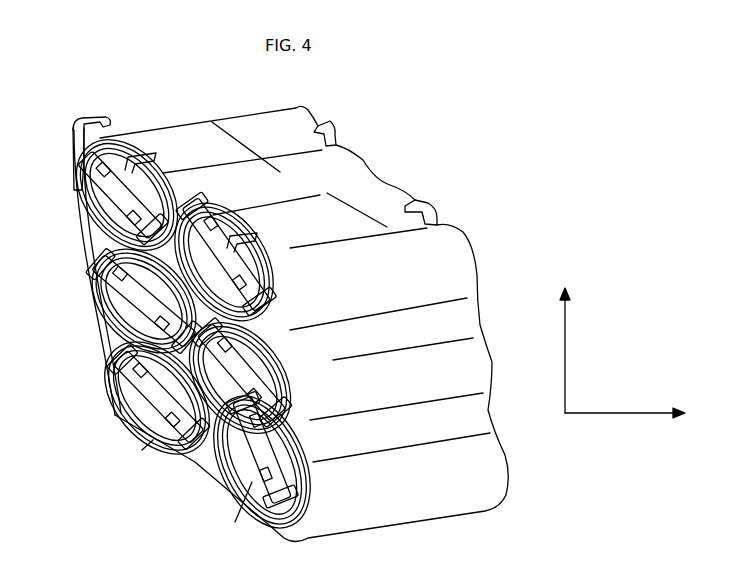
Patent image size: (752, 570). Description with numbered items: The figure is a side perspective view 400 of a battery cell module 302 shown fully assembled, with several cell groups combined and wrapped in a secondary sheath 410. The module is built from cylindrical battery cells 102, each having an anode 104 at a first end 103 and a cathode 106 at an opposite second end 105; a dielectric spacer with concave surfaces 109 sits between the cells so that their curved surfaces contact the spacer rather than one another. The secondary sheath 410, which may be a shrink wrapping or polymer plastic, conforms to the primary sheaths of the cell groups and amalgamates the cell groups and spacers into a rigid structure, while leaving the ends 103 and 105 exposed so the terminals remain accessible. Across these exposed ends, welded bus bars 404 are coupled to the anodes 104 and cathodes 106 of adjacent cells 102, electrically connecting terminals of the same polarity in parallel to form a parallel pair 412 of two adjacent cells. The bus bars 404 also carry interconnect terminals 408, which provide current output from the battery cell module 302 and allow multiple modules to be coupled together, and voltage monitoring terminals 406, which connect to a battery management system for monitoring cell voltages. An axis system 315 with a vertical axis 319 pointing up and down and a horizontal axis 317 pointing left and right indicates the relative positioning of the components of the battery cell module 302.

The side perspective view 400 is at (603, 77).
The battery cell module 302 is at (490, 230).
The cylindrical battery cell 102 is at (60, 332).
The first end 103 is at (273, 347).
The anode or negative cell terminal 104 is at (268, 254).
The second end 105 is at (276, 444).
The cathode or positive cell terminal 106 is at (290, 397).
The concave surface 109 is at (97, 247).
The welded bus bar 404 is at (260, 300).
The voltage monitoring terminal 406 is at (107, 118).
The interconnect terminal 408 is at (145, 157).
The secondary sheath 410 is at (110, 403).
The parallel pair 412 is at (250, 326).
The axis system 315 is at (624, 369).
The horizontal axis 317 is at (610, 414).
The vertical axis 319 is at (563, 358).